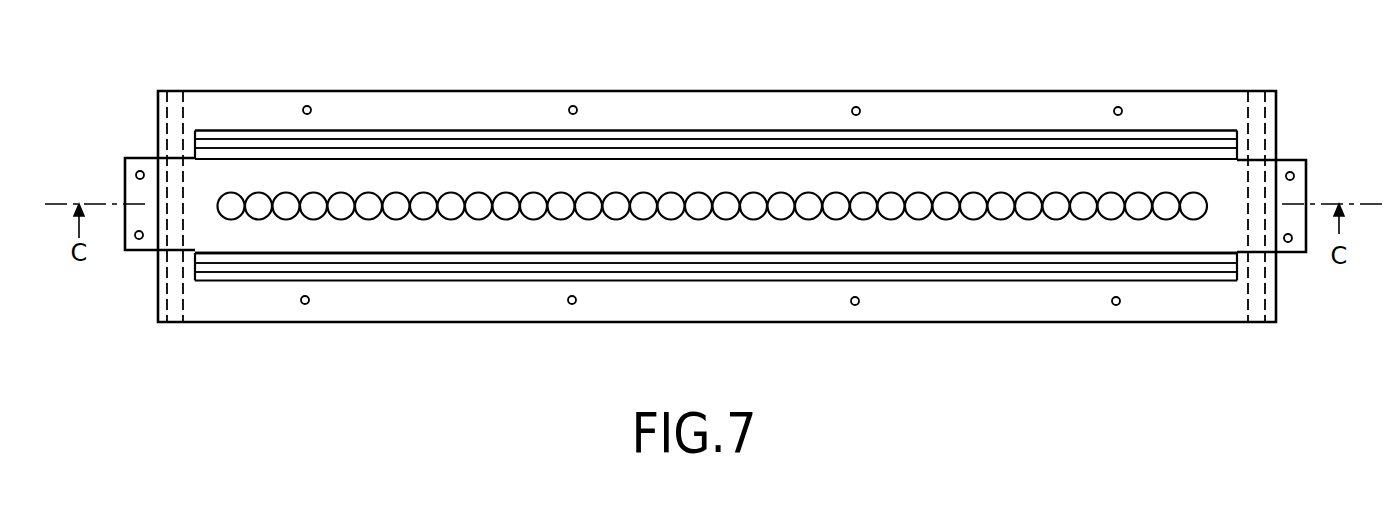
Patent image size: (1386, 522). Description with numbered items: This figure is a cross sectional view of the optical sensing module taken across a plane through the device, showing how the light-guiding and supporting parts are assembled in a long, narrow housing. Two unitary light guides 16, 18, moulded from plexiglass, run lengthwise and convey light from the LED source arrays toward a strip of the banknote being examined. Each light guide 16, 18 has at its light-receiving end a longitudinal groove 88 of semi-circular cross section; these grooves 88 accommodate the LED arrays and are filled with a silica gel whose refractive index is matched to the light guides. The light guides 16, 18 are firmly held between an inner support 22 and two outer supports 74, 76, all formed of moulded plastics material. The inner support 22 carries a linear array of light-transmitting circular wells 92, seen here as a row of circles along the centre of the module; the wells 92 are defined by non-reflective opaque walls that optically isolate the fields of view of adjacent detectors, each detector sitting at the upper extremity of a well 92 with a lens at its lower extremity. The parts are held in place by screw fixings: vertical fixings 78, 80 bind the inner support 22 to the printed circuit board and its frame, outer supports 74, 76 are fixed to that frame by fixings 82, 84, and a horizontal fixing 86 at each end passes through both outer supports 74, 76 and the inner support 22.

The light guide 16 is at (967, 147).
The light guide 18 is at (1036, 282).
The inner support 22 is at (948, 242).
The outer support 74 is at (713, 107).
The outer support 76 is at (687, 303).
The vertical fixing 78 is at (136, 176).
The vertical fixing 80 is at (139, 240).
The fixing 82 is at (308, 106).
The fixing 84 is at (306, 304).
The horizontal fixing 86 is at (158, 132).
The longitudinal groove 88 is at (467, 145).
The light-transmitting circular well 92 is at (281, 220).